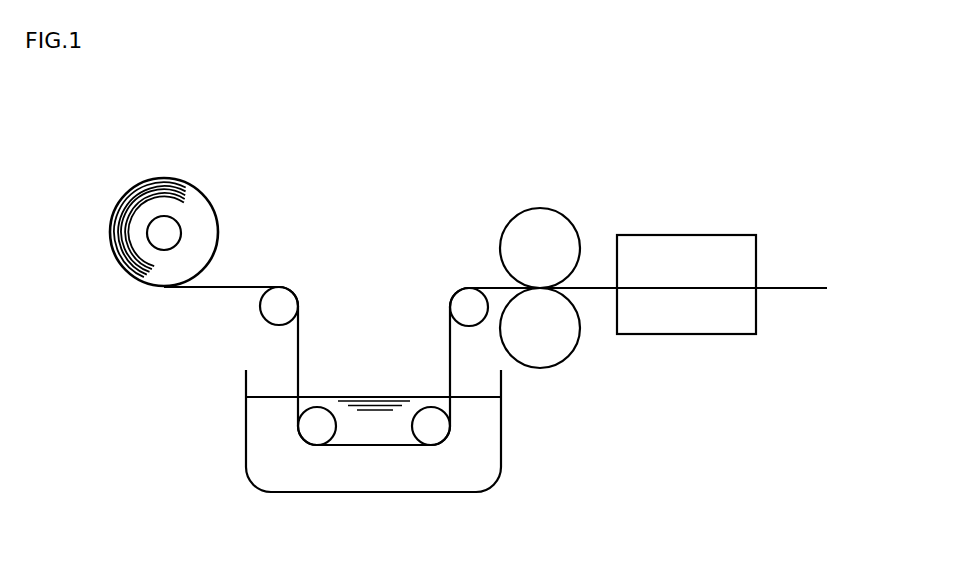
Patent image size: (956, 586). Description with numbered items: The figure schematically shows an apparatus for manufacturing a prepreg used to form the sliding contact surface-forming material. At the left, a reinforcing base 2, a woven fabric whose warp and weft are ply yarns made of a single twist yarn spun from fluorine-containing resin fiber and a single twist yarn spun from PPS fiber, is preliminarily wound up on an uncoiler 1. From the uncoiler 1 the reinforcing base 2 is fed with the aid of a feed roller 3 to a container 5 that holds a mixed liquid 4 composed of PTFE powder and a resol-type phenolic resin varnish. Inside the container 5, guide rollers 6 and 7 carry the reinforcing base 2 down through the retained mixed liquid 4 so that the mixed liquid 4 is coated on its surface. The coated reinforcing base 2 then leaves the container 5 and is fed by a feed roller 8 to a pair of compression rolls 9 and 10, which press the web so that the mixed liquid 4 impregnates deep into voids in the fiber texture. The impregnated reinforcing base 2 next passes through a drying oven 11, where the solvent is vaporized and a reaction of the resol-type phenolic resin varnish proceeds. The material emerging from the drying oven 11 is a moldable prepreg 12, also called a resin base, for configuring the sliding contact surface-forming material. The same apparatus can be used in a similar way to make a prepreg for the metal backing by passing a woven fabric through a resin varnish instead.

The uncoiler 1 is at (168, 227).
The reinforcing base 2 is at (240, 286).
The feed roller 3 is at (267, 313).
The mixed liquid 4 is at (372, 427).
The container 5 is at (502, 439).
The guide roller 6 is at (315, 437).
The guide roller 7 is at (432, 436).
The feed roller 8 is at (463, 300).
The compression roll 9 is at (540, 238).
The compression roll 10 is at (560, 343).
The drying oven 11 is at (683, 253).
The prepreg 12 is at (782, 292).